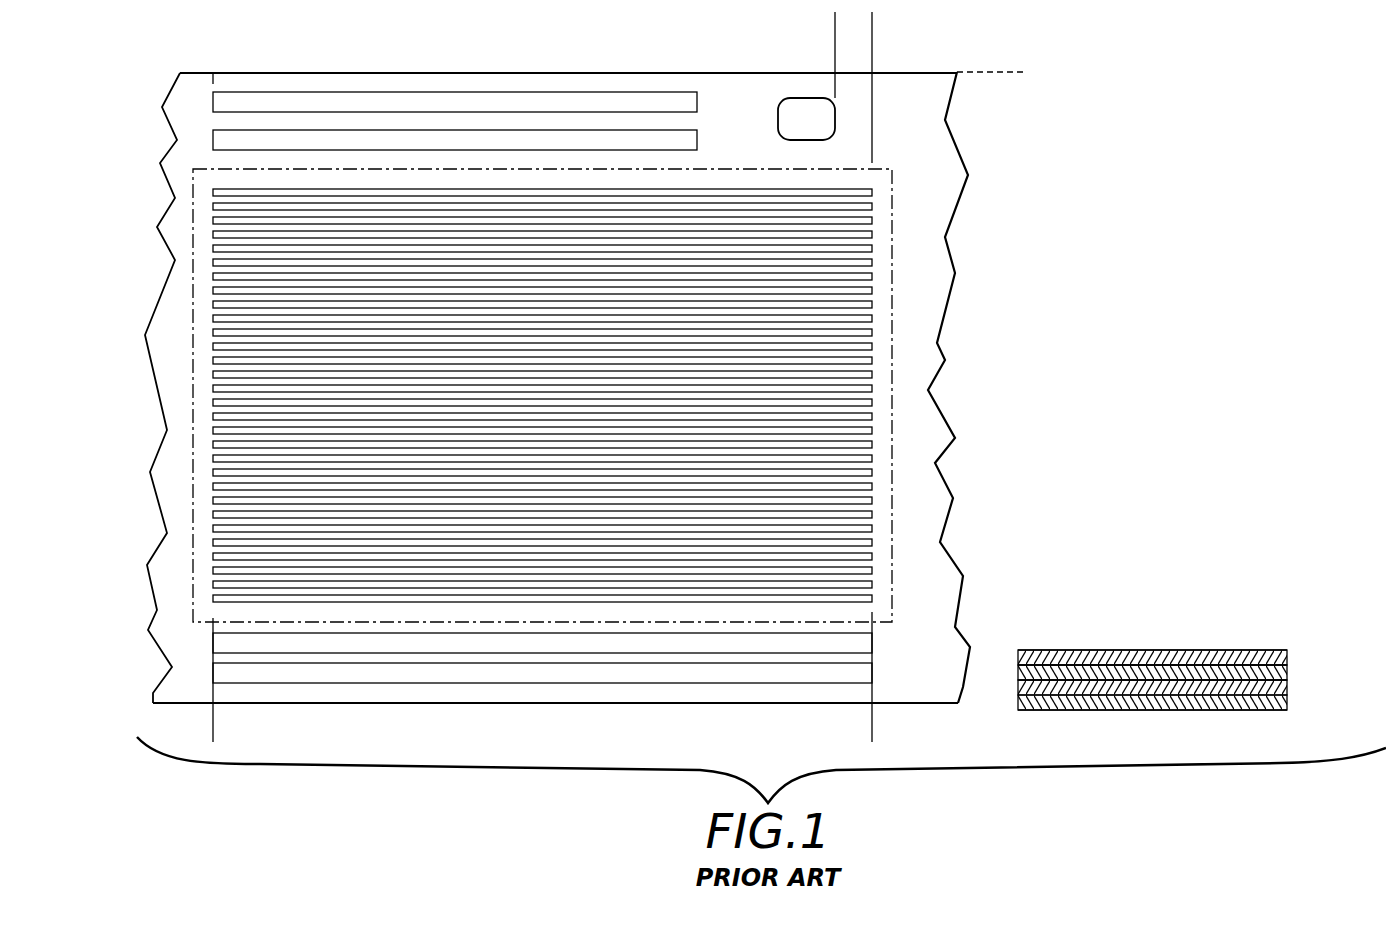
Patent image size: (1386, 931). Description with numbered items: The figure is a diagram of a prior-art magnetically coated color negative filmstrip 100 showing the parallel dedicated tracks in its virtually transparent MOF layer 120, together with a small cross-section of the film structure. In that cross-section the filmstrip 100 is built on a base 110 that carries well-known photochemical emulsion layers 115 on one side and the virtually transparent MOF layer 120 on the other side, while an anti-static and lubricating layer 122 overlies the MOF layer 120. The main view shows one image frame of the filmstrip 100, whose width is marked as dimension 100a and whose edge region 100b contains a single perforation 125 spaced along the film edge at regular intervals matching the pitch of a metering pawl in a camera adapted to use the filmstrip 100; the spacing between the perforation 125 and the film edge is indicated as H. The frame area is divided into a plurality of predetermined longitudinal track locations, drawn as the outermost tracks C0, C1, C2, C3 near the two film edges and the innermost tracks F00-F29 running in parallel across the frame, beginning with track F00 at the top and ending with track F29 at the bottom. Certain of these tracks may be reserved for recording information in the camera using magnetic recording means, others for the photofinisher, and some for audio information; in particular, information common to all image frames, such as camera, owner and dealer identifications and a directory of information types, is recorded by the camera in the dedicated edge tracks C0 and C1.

The filmstrip 100 is at (957, 72).
The panel width 100a is at (872, 727).
The panel edge region 100b is at (727, 88).
The perforation 125 is at (783, 99).
The base 110 is at (1287, 672).
The photochemical emulsion layers 115 is at (1287, 655).
The MOF layer 120 is at (1287, 687).
The anti-static and lubricating layer 122 is at (1287, 703).
The innermost track F00 is at (872, 192).
The innermost track F29 is at (873, 603).
The innermost tracks F00-F29 is at (1008, 72).
The dedicated edge track C0 is at (542, 644).
The dedicated edge track C1 is at (542, 674).
The outermost track C2 is at (455, 141).
The outermost track C3 is at (455, 103).
The gap width H is at (785, 35).